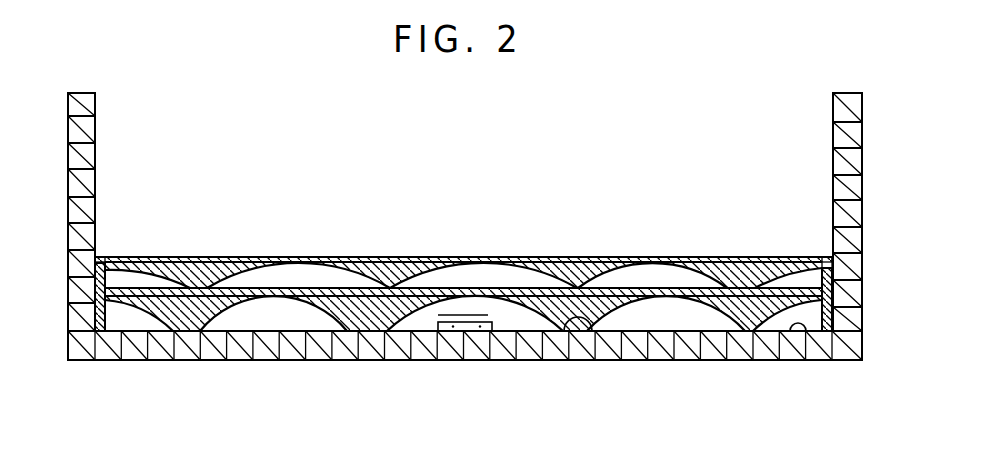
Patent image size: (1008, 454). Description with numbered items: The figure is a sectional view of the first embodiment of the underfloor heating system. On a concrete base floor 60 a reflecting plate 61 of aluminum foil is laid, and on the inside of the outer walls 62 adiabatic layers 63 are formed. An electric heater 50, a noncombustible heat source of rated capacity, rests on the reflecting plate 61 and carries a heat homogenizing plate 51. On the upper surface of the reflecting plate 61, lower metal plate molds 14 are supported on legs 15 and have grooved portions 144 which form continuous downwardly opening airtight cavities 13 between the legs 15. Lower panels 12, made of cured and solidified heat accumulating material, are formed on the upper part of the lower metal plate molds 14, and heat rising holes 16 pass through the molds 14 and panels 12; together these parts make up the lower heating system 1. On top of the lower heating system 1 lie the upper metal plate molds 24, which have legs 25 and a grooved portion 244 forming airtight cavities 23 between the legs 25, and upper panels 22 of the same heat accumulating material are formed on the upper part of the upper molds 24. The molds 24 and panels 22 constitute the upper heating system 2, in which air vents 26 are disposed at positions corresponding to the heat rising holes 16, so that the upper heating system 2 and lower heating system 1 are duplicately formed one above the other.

The lower heating system 1 is at (462, 288).
The upper heating system 2 is at (513, 252).
The lower panel 12 is at (187, 272).
The airtight cavity 13 is at (657, 318).
The lower metal plate mold 14 is at (264, 307).
The leg 15 is at (174, 328).
The heat rising hole 16 is at (110, 300).
The upper panel 22 is at (395, 262).
The airtight cavity 23 is at (633, 278).
The upper metal plate mold 24 is at (311, 277).
The leg 25 is at (145, 272).
The air vent 26 is at (113, 272).
The electric heater 50 is at (465, 326).
The heat homogenizing plate 51 is at (488, 315).
The concrete base floor 60 is at (632, 350).
The reflecting plate 61 is at (798, 333).
The outer wall 62 is at (864, 175).
The adiabatic layer 63 is at (835, 300).
The grooved portion 144 is at (577, 333).
The grooved portion 244 is at (553, 288).